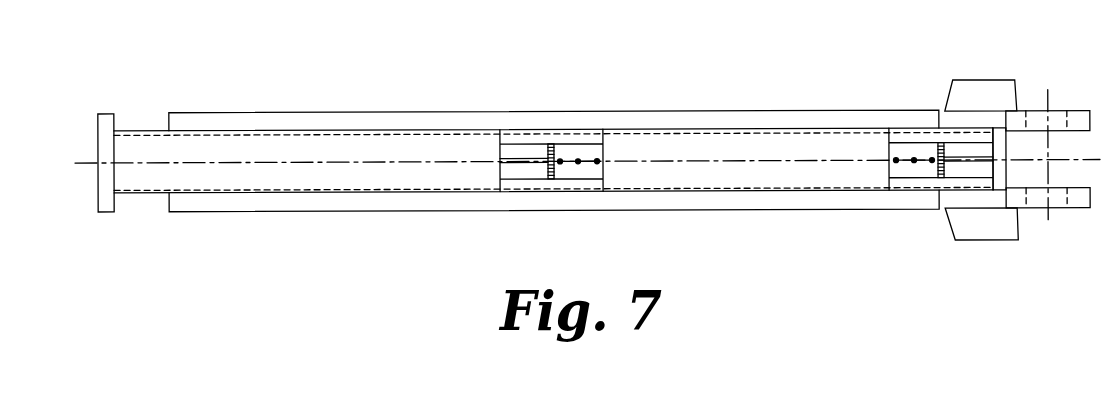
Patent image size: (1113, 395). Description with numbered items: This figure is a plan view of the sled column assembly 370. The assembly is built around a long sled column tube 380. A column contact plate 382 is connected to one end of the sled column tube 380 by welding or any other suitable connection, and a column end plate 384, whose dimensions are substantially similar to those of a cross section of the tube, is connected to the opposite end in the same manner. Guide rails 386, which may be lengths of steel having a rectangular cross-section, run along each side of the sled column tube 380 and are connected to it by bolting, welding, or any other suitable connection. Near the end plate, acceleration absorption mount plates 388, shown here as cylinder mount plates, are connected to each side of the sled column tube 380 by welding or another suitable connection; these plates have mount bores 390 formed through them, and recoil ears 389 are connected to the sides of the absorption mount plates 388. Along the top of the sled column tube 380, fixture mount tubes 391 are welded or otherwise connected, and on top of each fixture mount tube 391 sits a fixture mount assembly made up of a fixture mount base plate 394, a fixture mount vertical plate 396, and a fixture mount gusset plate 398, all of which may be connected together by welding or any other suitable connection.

The sled column assembly 370 is at (250, 76).
The sled column tube 380 is at (145, 196).
The column contact plate 382 is at (98, 124).
The column end plate 384 is at (1000, 193).
The guide rails 386 is at (380, 213).
The acceleration absorption mount plates 388 is at (1077, 118).
The recoil ears 389 is at (978, 91).
The mount bores 390 is at (1027, 128).
The fixture mount tubes 391 is at (521, 133).
The fixture mount base plate 394 is at (590, 172).
The fixture mount vertical plate 396 is at (557, 172).
The fixture mount gusset plate 398 is at (520, 170).